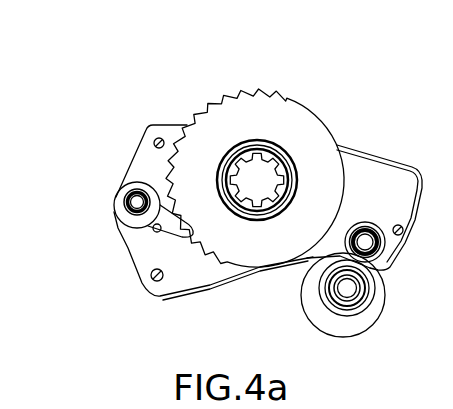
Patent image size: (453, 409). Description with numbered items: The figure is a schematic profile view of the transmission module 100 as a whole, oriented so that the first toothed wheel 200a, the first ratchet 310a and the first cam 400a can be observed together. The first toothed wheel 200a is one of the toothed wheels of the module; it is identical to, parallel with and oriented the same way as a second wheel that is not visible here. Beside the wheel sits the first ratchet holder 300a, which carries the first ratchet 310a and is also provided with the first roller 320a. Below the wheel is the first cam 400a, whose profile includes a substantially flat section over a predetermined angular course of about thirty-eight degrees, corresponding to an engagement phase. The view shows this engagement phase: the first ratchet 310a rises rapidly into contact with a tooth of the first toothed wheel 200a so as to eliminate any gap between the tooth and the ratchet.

The transmission module 100 is at (66, 88).
The first toothed wheel 200a is at (233, 112).
The first ratchet holder 300a is at (145, 160).
The first ratchet 310a is at (145, 218).
The first roller 320a is at (365, 223).
The first cam 400a is at (315, 308).